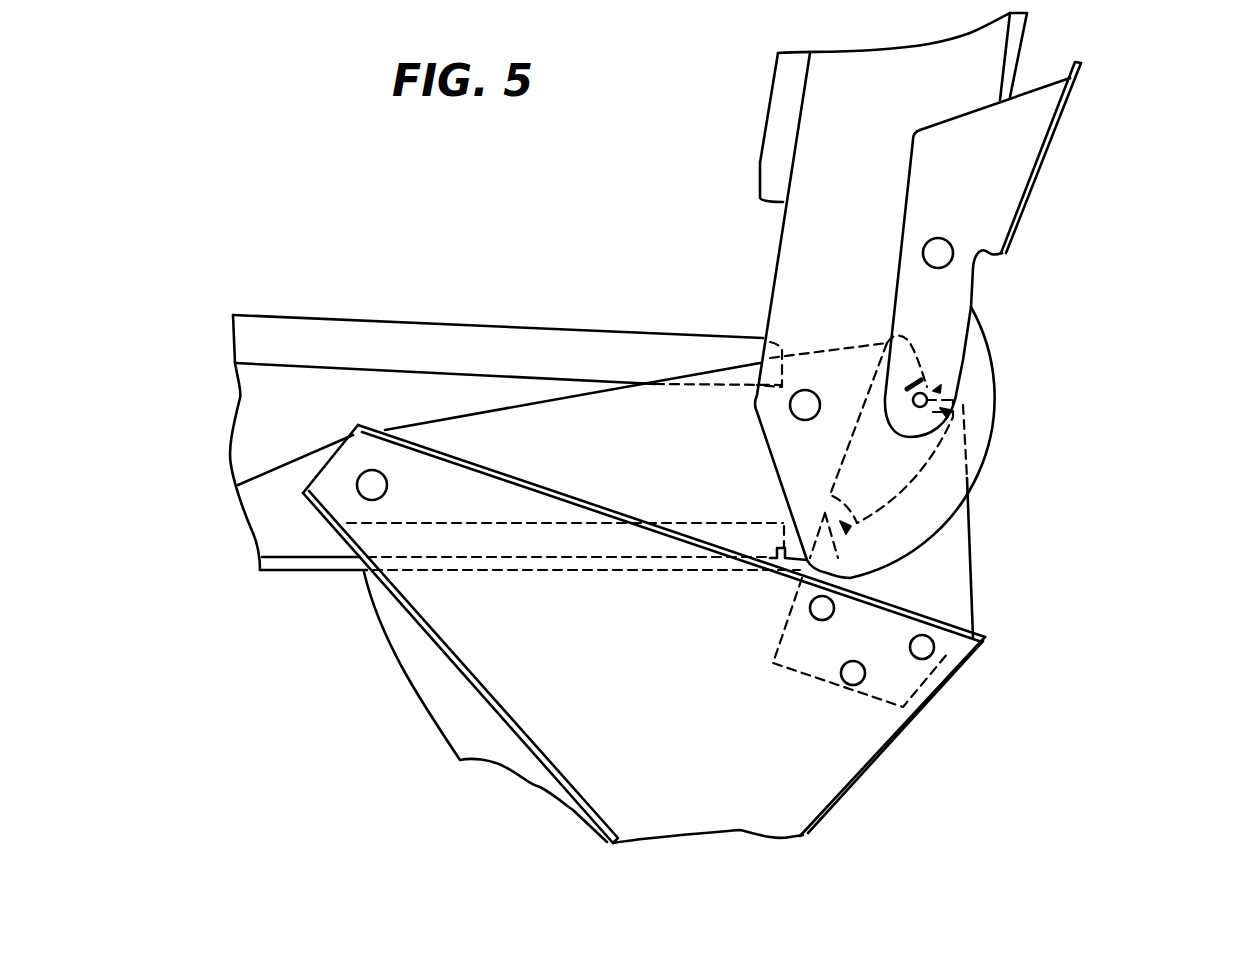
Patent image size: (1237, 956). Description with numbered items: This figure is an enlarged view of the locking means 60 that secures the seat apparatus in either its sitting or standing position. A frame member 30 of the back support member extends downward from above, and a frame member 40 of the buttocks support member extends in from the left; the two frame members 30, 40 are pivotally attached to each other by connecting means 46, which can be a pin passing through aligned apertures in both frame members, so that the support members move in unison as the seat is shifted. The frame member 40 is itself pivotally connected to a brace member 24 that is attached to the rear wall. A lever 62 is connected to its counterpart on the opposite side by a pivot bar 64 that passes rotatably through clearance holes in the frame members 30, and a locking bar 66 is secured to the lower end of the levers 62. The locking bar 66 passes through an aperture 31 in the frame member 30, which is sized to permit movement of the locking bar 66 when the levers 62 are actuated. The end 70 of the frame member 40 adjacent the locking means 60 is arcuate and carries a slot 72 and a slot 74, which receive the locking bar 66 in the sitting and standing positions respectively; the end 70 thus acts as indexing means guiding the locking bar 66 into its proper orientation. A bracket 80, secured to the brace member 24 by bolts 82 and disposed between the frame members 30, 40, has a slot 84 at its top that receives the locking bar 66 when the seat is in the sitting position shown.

The brace member 24 is at (840, 757).
The frame member 30 is at (897, 67).
The aperture 31 is at (940, 389).
The frame member 40 is at (262, 510).
The connecting means 46 is at (801, 398).
The locking means 60 is at (1103, 295).
The lever 62 is at (1033, 132).
The pivot bar 64 is at (940, 253).
The locking bar 66 is at (927, 400).
The end 70 is at (893, 477).
The slot 72 is at (921, 378).
The slot 74 is at (847, 533).
The bracket 80 is at (953, 597).
The bolt 82 is at (934, 646).
The slot 84 is at (947, 415).